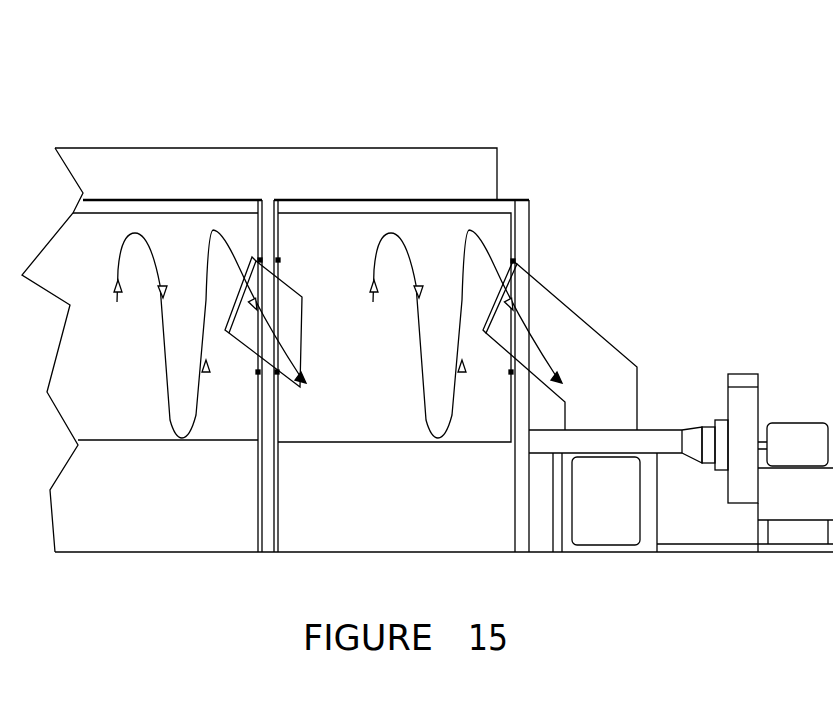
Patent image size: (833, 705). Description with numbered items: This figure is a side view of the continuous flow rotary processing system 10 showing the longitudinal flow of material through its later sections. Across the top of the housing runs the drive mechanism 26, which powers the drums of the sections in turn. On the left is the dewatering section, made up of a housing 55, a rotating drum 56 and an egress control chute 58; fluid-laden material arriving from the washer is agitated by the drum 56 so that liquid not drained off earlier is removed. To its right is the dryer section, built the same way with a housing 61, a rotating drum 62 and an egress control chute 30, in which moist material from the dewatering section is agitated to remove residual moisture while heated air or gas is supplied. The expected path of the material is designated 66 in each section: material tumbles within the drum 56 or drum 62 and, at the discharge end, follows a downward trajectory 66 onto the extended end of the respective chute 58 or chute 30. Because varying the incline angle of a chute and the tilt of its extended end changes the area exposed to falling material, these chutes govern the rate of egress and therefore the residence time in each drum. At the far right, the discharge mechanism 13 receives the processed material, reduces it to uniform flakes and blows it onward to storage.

The continuous flow rotary processing system 10 is at (371, 88).
The discharge mechanism 13 is at (766, 345).
The drive mechanism 26 is at (272, 165).
The egress control chute 30 is at (503, 340).
The housing 55 is at (182, 186).
The drum 56 is at (130, 441).
The egress control chute 58 is at (243, 345).
The housing 61 is at (388, 190).
The drum 62 is at (358, 443).
The expected path of material 66 is at (225, 266).